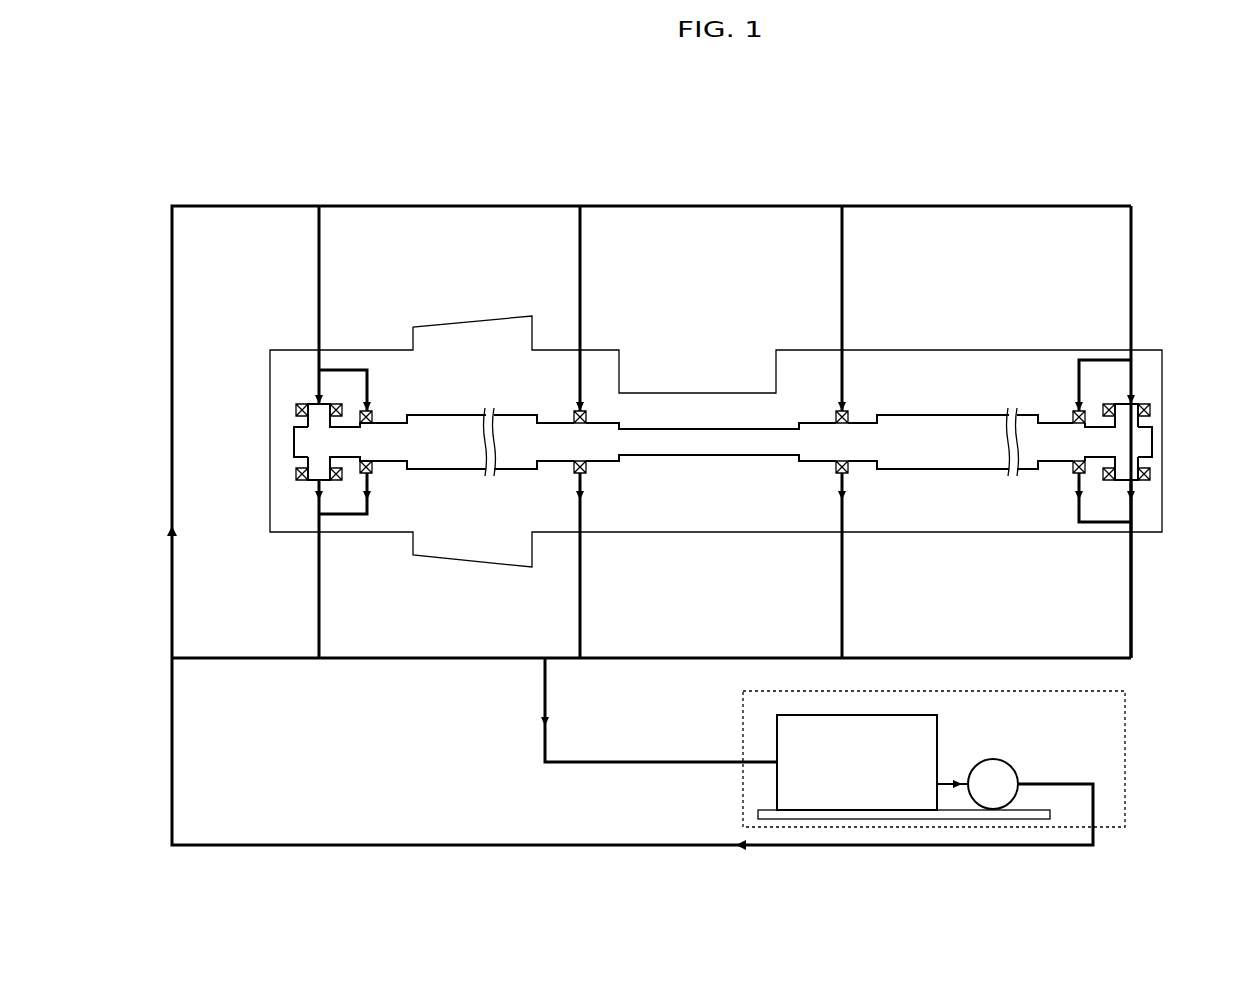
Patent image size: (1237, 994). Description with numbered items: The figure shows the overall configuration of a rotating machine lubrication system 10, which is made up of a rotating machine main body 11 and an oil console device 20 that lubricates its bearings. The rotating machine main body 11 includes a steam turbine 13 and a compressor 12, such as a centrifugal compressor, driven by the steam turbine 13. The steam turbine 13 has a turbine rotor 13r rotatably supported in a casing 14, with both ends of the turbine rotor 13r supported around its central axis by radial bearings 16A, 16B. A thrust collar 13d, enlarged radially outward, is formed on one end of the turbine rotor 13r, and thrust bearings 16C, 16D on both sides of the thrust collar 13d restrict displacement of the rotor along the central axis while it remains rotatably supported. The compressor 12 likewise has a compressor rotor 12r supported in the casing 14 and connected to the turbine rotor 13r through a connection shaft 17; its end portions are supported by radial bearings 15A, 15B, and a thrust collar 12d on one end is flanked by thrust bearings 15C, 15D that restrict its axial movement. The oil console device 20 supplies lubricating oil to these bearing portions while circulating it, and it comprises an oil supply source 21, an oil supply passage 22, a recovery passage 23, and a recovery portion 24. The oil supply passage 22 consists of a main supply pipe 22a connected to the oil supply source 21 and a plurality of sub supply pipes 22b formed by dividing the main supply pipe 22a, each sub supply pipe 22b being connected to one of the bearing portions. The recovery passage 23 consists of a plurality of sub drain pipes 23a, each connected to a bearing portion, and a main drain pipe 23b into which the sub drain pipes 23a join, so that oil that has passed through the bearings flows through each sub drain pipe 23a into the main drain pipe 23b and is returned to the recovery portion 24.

The rotating machine lubrication system 10 is at (1064, 176).
The rotating machine main body 11 is at (905, 343).
The compressor 12 is at (967, 348).
The thrust collar 12d is at (1148, 360).
The compressor rotor 12r is at (937, 469).
The steam turbine 13 is at (530, 315).
The thrust collar 13d is at (312, 481).
The turbine rotor 13r is at (463, 469).
The casing 14 is at (1020, 348).
The radial bearing 15A is at (835, 409).
The radial bearing 15B is at (1075, 474).
The thrust bearing 15C is at (1108, 481).
The thrust bearing 15D is at (1143, 481).
The radial bearing 16A is at (587, 409).
The radial bearing 16B is at (366, 409).
The thrust bearing 16C is at (337, 403).
The thrust bearing 16D is at (303, 403).
The connection shaft 17 is at (707, 427).
The oil console device 20 is at (1130, 705).
The oil supply source 21 is at (1017, 763).
The oil supply passage 22 is at (651, 481).
The main supply pipe 22a is at (280, 205).
The sub supply pipe 22b is at (320, 259).
The recovery passage 23 is at (653, 617).
The sub drain pipe 23a is at (320, 640).
The main drain pipe 23b is at (608, 760).
The recovery portion 24 is at (937, 747).